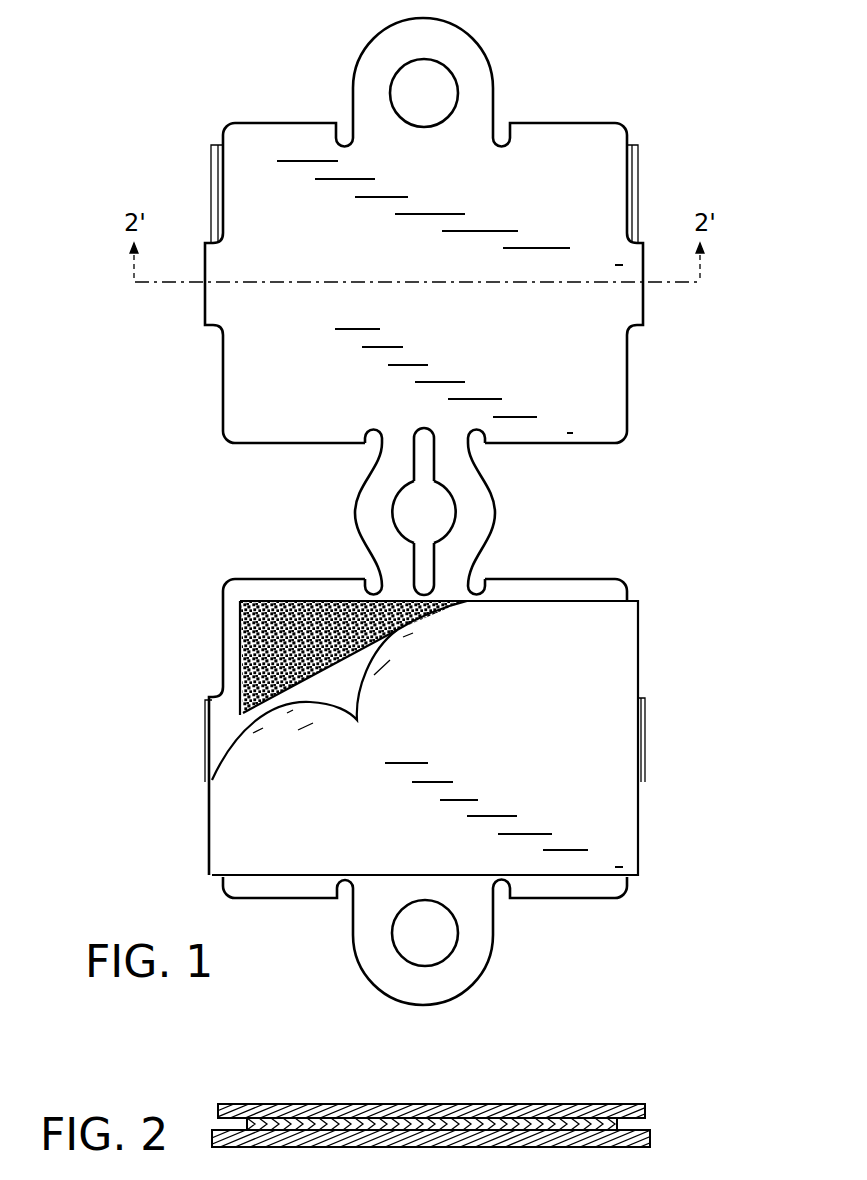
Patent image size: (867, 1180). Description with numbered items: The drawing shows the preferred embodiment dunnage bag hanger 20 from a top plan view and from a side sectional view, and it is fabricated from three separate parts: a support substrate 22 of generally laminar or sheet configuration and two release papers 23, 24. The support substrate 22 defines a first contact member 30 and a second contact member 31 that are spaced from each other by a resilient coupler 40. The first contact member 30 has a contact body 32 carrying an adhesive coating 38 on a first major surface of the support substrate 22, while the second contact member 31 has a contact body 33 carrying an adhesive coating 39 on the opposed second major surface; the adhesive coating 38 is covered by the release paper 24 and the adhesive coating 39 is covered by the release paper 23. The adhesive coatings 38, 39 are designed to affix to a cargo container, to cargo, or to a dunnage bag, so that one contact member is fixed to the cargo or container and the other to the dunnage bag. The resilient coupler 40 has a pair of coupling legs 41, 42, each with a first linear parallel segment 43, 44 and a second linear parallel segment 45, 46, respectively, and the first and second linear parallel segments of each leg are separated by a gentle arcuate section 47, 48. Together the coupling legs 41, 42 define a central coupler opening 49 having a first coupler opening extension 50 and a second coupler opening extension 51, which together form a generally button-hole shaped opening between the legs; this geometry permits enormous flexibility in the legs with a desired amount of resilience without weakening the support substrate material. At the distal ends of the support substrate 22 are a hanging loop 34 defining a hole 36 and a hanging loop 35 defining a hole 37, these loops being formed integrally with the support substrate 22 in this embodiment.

In FIG. 1, the dunnage bag hanger 20 is at (116, 50).
In FIG. 1, the support substrate 22 is at (225, 113).
In FIG. 1, the first contact member 30 is at (604, 118).
In FIG. 1, the hanging loop 34 is at (455, 47).
In FIG. 1, the hole 36 is at (440, 97).
In FIG. 1, the release paper 24 is at (636, 157).
In FIG. 2, the release paper 24 is at (650, 1136).
In FIG. 1, the contact body 32 is at (535, 197).
In FIG. 2, the contact body 32 is at (645, 1108).
In FIG. 1, the resilient coupler 40 is at (503, 507).
In FIG. 1, the first linear parallel segment 44 is at (392, 452).
In FIG. 1, the gentle arcuate section 48 is at (363, 512).
In FIG. 1, the coupling leg 42 is at (365, 536).
In FIG. 1, the second linear parallel segment 46 is at (390, 577).
In FIG. 1, the first linear parallel segment 43 is at (452, 452).
In FIG. 1, the gentle arcuate section 47 is at (477, 493).
In FIG. 1, the coupling leg 41 is at (488, 529).
In FIG. 1, the second linear parallel segment 45 is at (453, 577).
In FIG. 1, the first coupler opening extension 50 is at (420, 453).
In FIG. 1, the central coupler opening 49 is at (412, 503).
In FIG. 1, the second coupler opening extension 51 is at (423, 566).
In FIG. 1, the second contact member 31 is at (611, 572).
In FIG. 1, the contact body 33 is at (555, 888).
In FIG. 1, the hanging loop 35 is at (467, 968).
In FIG. 1, the hole 37 is at (440, 923).
In FIG. 1, the release paper 23 is at (538, 748).
In FIG. 1, the adhesive coating 39 is at (306, 657).
In FIG. 2, the adhesive coating 38 is at (617, 1122).